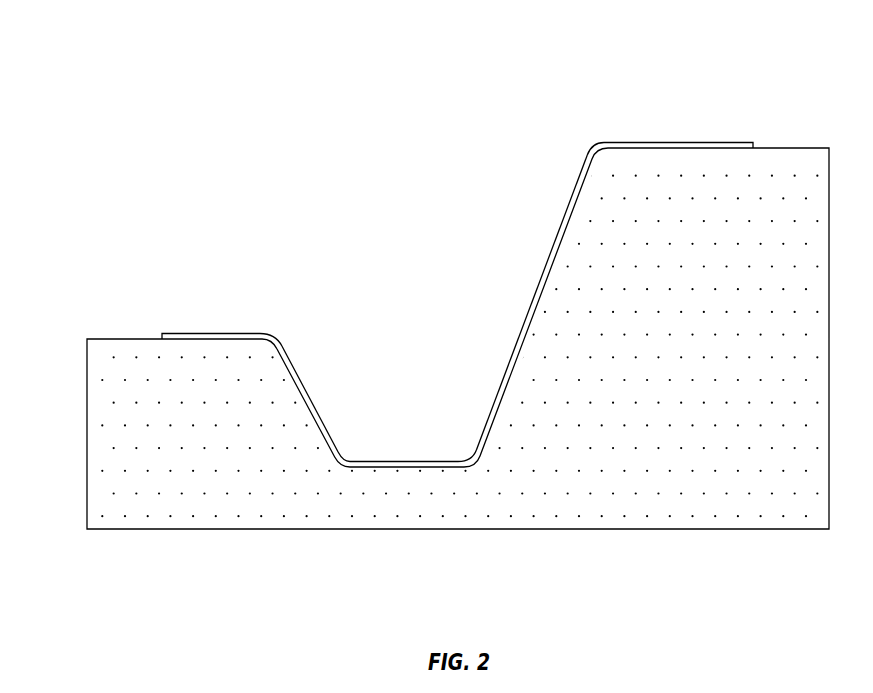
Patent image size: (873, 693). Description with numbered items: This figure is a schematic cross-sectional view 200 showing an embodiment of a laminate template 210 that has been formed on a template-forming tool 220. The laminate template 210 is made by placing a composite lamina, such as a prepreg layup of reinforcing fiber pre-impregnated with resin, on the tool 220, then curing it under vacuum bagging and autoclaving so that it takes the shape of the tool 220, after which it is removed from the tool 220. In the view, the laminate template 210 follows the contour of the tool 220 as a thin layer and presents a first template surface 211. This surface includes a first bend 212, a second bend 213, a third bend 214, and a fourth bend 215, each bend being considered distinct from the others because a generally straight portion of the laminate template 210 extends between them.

The cross-sectional view 200 is at (102, 117).
The laminate template 210 is at (643, 143).
The first template surface 211 is at (553, 224).
The first bend 212 is at (583, 145).
The second bend 213 is at (470, 448).
The third bend 214 is at (342, 453).
The fourth bend 215 is at (289, 335).
The template-forming tool 220 is at (563, 347).